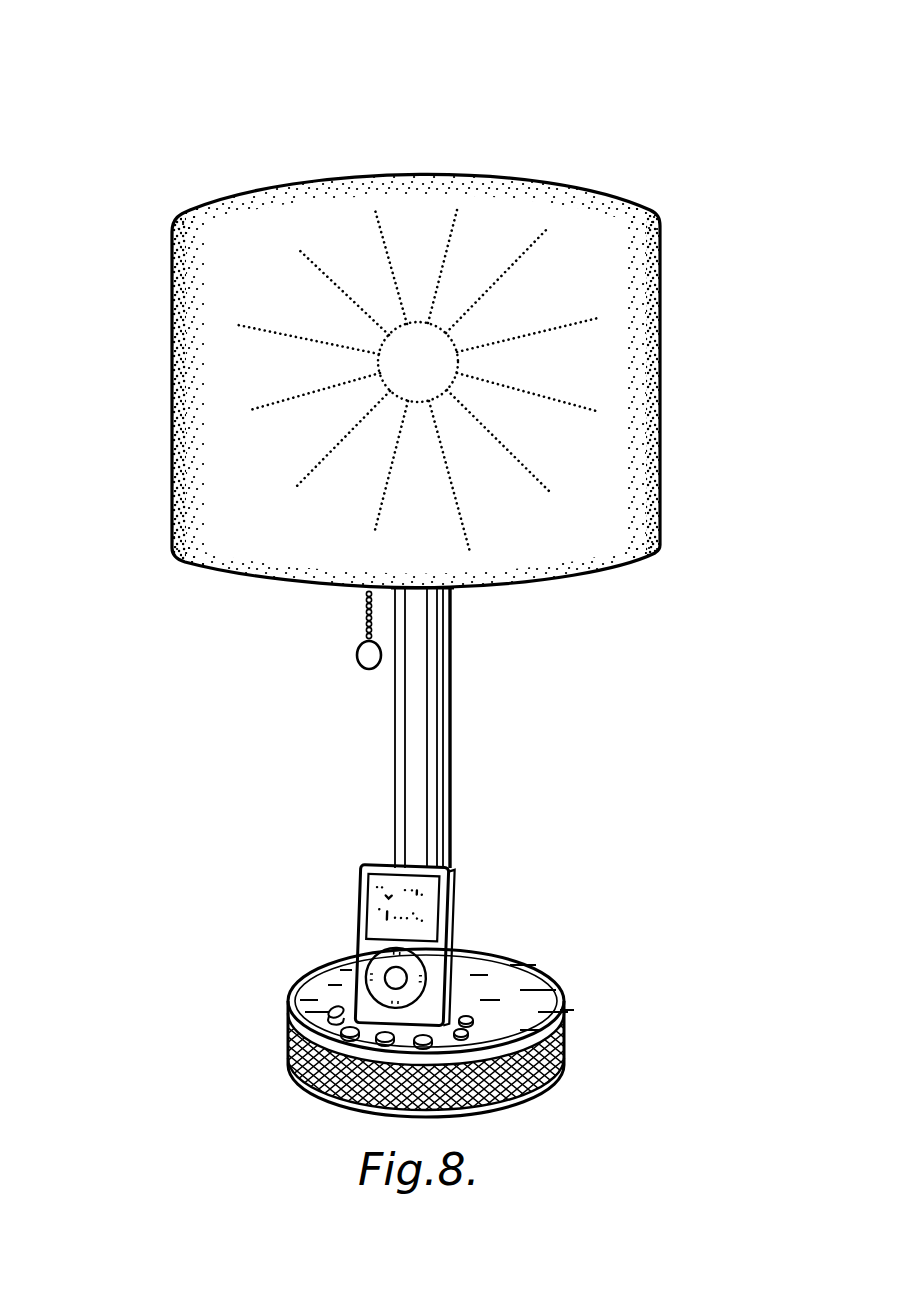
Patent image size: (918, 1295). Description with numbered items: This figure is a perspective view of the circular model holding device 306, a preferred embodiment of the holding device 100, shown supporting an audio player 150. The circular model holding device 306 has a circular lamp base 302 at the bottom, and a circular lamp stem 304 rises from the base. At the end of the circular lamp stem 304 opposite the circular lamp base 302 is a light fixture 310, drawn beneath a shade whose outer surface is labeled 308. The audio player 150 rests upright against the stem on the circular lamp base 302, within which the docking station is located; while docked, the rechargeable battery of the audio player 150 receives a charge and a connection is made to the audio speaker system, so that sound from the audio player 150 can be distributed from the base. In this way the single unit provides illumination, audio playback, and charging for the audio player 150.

The holding device 100 is at (677, 195).
The circular model holding device 306 is at (411, 316).
The lamp shade 308 is at (172, 360).
The light fixture 310 is at (453, 360).
The circular lamp stem 304 is at (451, 731).
The audio player 150 is at (356, 892).
The circular lamp base 302 is at (548, 972).